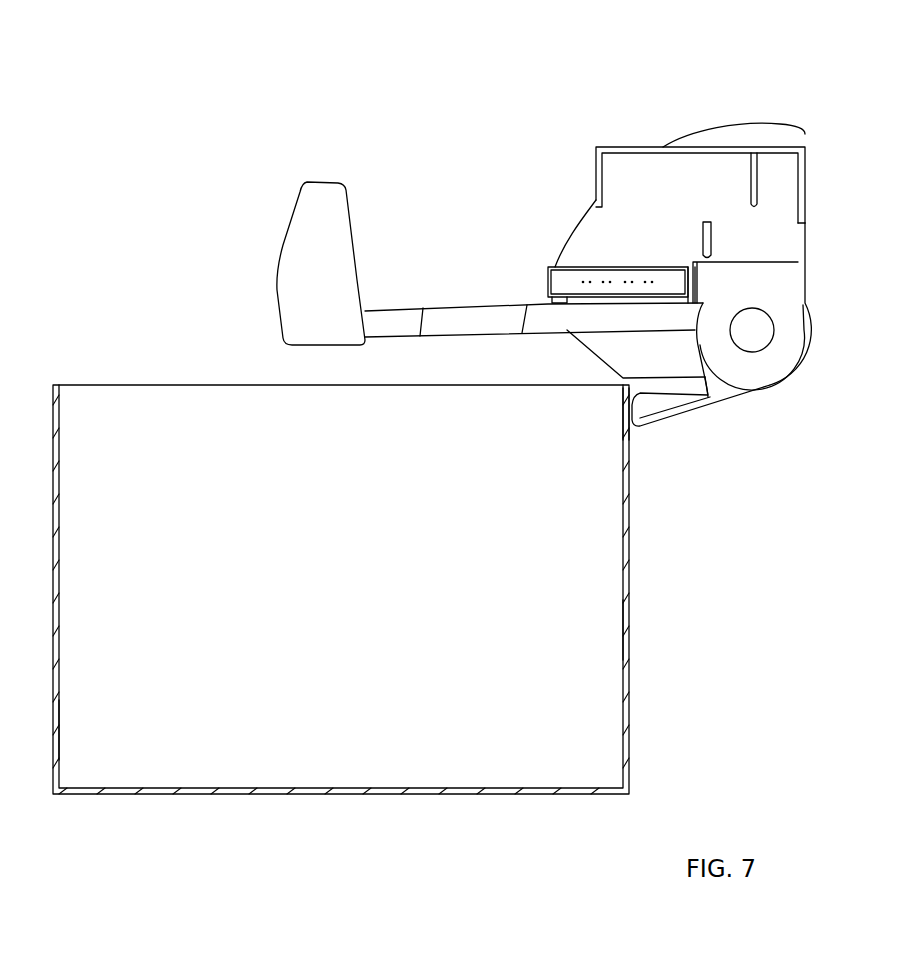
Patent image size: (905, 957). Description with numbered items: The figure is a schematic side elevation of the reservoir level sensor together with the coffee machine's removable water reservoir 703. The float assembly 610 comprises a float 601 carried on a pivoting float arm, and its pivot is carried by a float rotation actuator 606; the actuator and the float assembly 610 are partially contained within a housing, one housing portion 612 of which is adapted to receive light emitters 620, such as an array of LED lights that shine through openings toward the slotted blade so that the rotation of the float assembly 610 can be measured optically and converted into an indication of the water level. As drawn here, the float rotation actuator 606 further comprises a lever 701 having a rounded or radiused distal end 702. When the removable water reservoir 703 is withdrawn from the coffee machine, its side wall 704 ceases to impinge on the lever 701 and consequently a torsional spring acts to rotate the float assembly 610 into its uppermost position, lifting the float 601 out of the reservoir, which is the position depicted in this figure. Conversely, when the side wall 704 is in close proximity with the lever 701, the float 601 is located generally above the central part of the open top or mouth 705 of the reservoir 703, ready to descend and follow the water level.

The float 601 is at (318, 222).
The float rotation actuator 606 is at (760, 395).
The float assembly 610 is at (472, 317).
The housing portion 612 is at (708, 166).
The light emitters 620 is at (634, 275).
The lever 701 is at (682, 418).
The rounded distal end 702 is at (630, 418).
The removable water reservoir 703 is at (492, 670).
The side wall 704 is at (628, 628).
The open top or mouth 705 is at (165, 384).